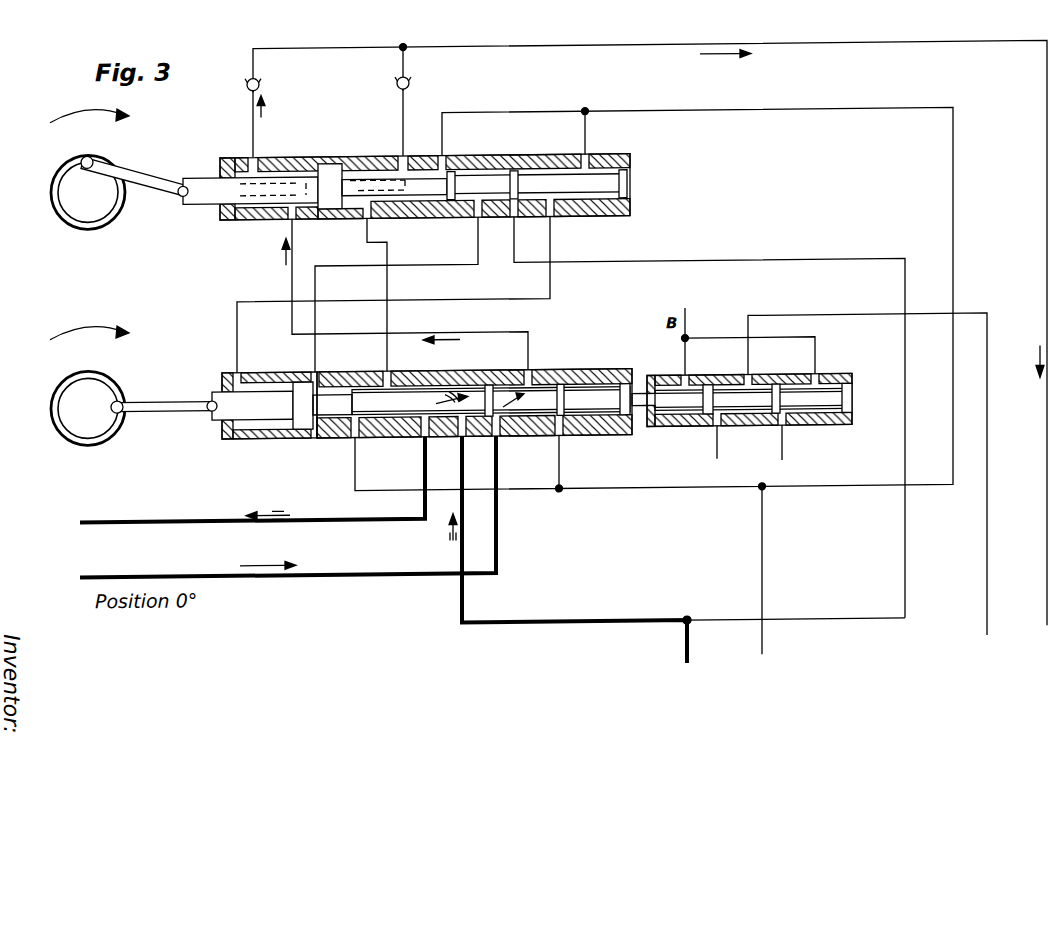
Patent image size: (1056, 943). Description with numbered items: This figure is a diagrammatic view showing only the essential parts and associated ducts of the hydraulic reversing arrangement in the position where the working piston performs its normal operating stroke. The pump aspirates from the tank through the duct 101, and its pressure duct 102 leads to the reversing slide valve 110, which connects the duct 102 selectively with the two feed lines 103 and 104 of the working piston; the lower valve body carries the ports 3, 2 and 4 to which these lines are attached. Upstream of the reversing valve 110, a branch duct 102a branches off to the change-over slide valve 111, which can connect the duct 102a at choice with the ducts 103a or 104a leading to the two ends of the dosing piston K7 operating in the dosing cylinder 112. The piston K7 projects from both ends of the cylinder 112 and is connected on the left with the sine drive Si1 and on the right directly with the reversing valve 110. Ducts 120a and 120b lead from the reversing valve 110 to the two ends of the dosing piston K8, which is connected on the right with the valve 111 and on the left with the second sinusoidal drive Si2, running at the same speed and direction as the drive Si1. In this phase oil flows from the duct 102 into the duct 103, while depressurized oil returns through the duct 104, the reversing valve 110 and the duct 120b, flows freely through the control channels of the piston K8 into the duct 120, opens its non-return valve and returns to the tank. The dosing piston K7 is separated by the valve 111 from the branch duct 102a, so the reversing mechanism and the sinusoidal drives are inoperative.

The duct 101 is at (953, 197).
The pressure duct 102 is at (668, 628).
The branch duct 102a is at (731, 265).
The feed line 103 is at (252, 482).
The duct 103a is at (467, 267).
The feed line 104 is at (288, 506).
The duct 104a is at (551, 285).
The reversing slide valve 110 is at (466, 391).
The change-over slide valve 111 is at (528, 183).
The dosing cylinder 112 is at (263, 440).
The duct 120 is at (300, 49).
The duct 120a is at (388, 249).
The duct 120b is at (416, 296).
The port 2 is at (452, 446).
The port 3 is at (416, 447).
The port 4 is at (487, 446).
The dosing piston K7 is at (419, 404).
The dosing piston K8 is at (404, 187).
The sine drive Si1 is at (131, 385).
The sinusoidal drive Si2 is at (118, 168).